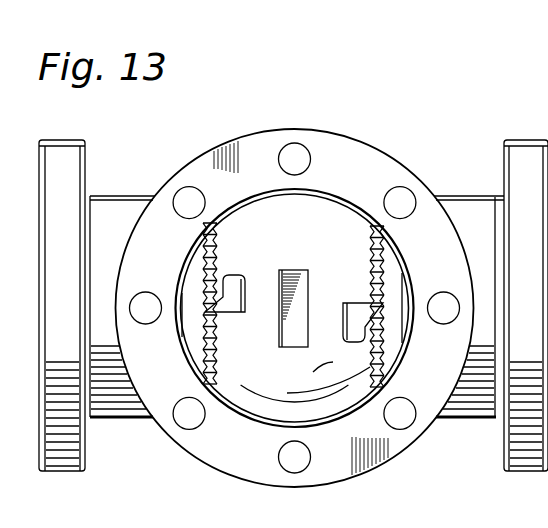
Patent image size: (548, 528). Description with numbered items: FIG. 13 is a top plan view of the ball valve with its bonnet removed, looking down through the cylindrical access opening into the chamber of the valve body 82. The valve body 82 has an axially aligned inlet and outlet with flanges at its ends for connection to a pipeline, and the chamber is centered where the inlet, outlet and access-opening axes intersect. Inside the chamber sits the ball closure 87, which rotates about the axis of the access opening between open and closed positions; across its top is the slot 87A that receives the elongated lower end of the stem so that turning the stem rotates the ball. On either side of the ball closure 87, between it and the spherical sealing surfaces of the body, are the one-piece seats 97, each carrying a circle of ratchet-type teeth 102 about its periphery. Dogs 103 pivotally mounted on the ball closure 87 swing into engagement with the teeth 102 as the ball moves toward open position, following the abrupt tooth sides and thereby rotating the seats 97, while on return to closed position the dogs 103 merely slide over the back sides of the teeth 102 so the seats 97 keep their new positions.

The valve body 82 is at (184, 163).
The ball closure 87 is at (312, 234).
The slot 87A is at (306, 300).
The seats 97 is at (193, 324).
The teeth 102 is at (218, 251).
The dogs 103 is at (231, 313).